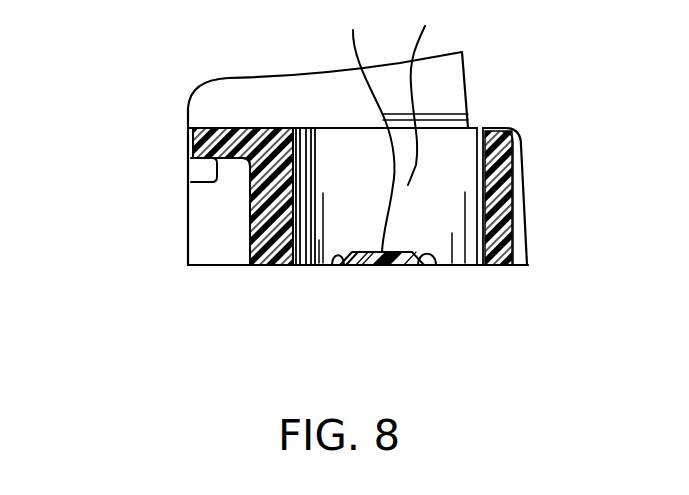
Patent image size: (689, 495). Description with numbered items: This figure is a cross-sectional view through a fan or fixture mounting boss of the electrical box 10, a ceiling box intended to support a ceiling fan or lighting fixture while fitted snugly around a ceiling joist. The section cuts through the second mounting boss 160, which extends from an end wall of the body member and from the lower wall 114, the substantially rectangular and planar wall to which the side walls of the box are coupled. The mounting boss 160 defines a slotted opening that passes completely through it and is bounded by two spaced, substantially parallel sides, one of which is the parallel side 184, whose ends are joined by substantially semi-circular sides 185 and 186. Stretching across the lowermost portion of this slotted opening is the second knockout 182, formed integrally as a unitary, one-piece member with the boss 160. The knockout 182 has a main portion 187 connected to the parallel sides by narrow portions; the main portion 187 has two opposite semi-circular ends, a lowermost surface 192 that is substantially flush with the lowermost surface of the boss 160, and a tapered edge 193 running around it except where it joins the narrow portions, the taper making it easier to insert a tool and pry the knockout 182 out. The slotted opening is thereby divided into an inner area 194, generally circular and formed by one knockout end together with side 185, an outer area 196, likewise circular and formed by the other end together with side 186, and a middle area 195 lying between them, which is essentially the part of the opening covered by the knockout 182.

The electrical box 10 is at (172, 56).
The lower wall 114 is at (188, 180).
The second mounting boss 160 is at (241, 230).
The second knockout 182 is at (365, 128).
The second parallel side 184 is at (384, 205).
The semi-circular side 185 is at (300, 148).
The semi-circular side 186 is at (483, 147).
The main portion 187 is at (385, 266).
The lowermost surface 192 is at (372, 266).
The tapered edge 193 is at (333, 266).
The inner area 194 is at (318, 266).
The middle area 195 is at (427, 92).
The outer area 196 is at (456, 264).